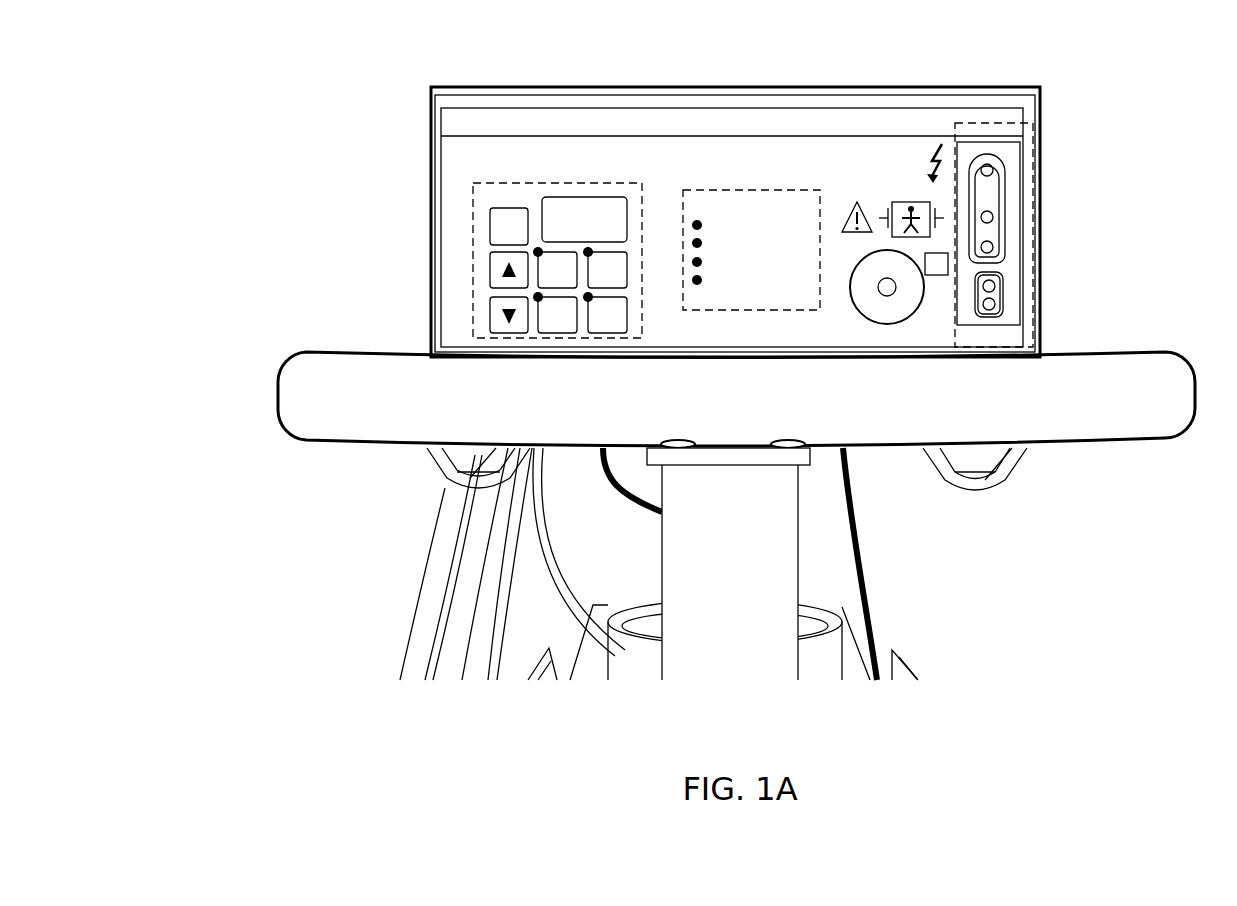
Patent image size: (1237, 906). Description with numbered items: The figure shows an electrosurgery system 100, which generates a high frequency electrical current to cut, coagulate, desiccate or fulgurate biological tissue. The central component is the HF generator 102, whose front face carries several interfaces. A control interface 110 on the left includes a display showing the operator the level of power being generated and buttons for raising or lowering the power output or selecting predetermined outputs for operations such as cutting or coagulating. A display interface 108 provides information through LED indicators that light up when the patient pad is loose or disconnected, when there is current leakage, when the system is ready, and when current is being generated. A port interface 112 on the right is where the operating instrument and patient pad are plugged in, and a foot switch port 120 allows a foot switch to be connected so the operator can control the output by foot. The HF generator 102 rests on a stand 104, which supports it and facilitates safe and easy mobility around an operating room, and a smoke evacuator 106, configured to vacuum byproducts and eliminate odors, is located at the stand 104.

The electrosurgery system 100 is at (268, 239).
The HF generator 102 is at (930, 110).
The stand 104 is at (1113, 353).
The smoke evacuator 106 is at (847, 606).
The display interface 108 is at (680, 197).
The control interface 110 is at (473, 258).
The port interface 112 is at (1037, 192).
The foot switch port 120 is at (898, 323).